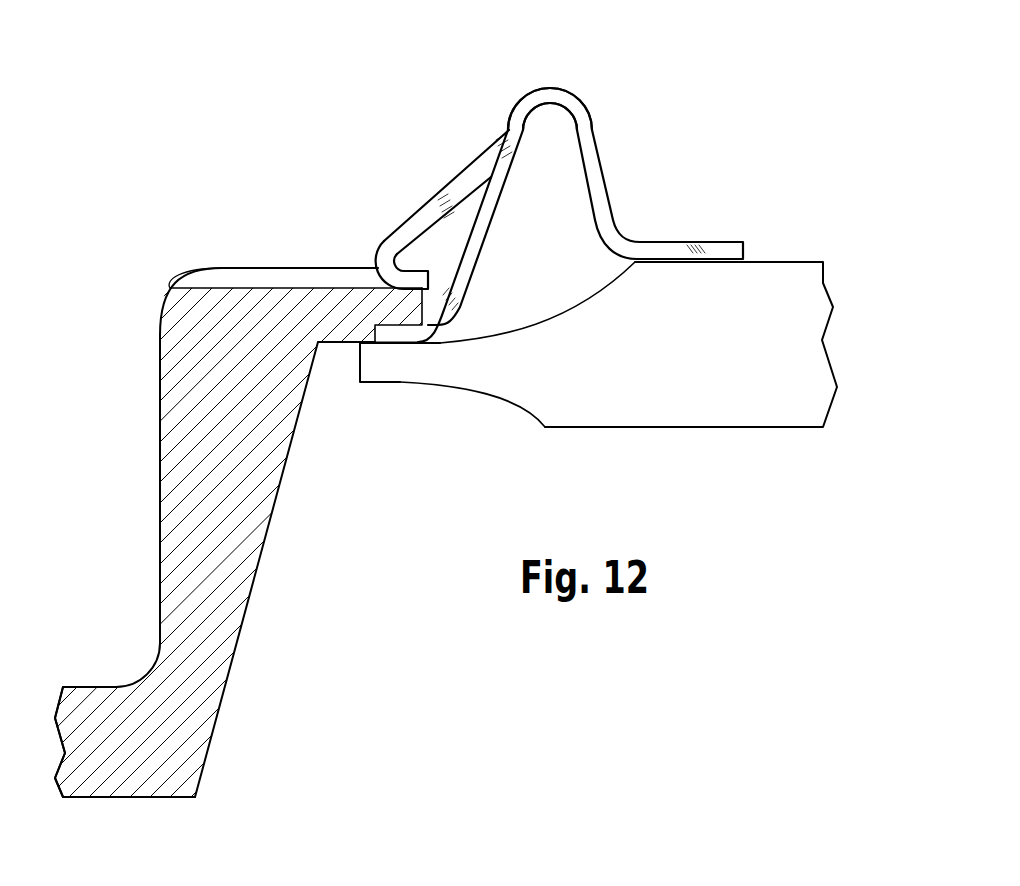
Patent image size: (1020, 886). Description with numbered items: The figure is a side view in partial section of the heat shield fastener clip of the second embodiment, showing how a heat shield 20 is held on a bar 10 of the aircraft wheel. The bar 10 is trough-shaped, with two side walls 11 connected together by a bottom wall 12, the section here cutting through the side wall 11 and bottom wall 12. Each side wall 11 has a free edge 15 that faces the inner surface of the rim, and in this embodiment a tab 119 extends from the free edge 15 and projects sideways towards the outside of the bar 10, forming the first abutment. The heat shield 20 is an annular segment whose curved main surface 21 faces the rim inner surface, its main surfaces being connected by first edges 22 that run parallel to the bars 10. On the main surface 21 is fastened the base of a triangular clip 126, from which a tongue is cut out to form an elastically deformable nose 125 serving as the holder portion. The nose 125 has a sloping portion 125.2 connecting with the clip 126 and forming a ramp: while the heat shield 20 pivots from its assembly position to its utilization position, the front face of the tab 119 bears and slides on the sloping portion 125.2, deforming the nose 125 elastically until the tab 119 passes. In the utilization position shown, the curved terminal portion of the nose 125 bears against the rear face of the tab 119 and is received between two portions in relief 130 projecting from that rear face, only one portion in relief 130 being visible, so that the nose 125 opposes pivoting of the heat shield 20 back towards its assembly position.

The bar 10 is at (197, 398).
The side wall 11 is at (193, 480).
The bottom wall 12 is at (102, 770).
The free edge 15 is at (228, 305).
The portion in relief 130 is at (273, 273).
The tab 119 is at (407, 308).
The nose 125 is at (385, 252).
The sloping portion 125.2 is at (448, 192).
The triangular clip 126 is at (560, 88).
The heat shield 20 is at (768, 248).
The main surface 21 is at (793, 259).
The first edge 22 is at (380, 367).